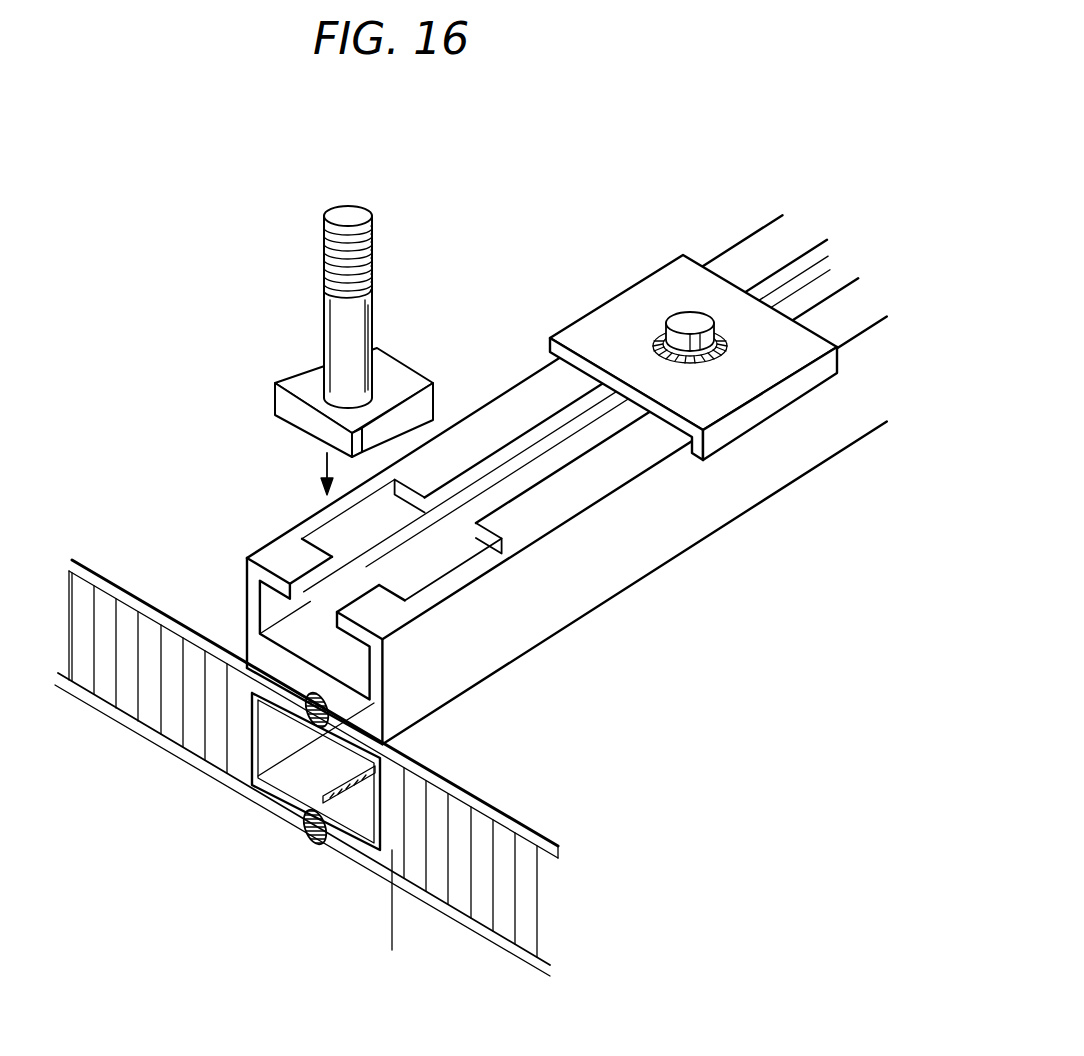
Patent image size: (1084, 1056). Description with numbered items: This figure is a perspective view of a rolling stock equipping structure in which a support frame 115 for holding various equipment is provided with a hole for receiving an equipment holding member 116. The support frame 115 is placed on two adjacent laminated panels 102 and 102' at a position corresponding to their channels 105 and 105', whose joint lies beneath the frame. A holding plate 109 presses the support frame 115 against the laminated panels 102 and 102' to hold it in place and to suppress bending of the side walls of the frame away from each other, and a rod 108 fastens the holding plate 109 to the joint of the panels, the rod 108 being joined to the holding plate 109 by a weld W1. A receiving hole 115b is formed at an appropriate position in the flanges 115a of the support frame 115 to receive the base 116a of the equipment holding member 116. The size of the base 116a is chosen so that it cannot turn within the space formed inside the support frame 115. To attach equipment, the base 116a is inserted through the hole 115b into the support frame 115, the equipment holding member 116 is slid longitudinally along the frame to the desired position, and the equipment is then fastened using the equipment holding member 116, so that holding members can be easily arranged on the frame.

The laminated panel 102 is at (306, 757).
The laminated panel 102' is at (405, 825).
The channel 105 is at (268, 767).
The channel 105' is at (336, 852).
The rod 108 is at (668, 318).
The holding plate 109 is at (610, 302).
The support frame 115 is at (567, 475).
The flange 115a is at (598, 478).
The receiving hole 115b is at (440, 565).
The equipment holding member 116 is at (374, 214).
The base 116a is at (414, 378).
The weld W1 is at (730, 346).